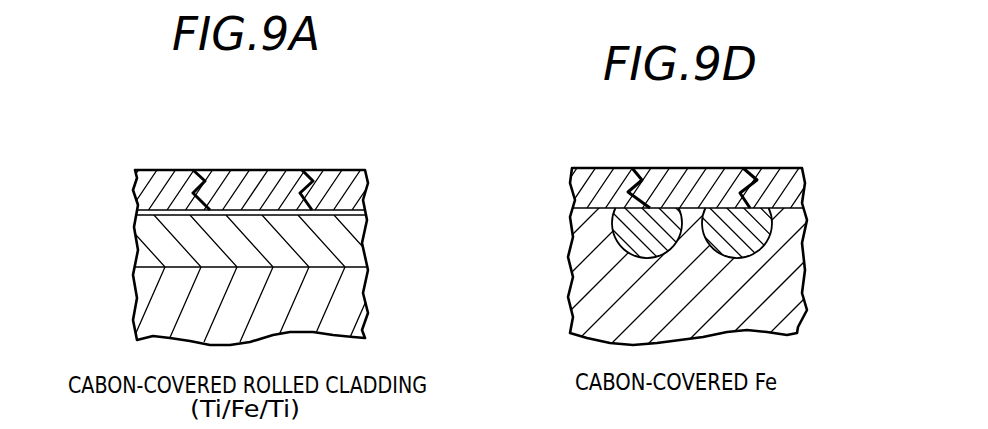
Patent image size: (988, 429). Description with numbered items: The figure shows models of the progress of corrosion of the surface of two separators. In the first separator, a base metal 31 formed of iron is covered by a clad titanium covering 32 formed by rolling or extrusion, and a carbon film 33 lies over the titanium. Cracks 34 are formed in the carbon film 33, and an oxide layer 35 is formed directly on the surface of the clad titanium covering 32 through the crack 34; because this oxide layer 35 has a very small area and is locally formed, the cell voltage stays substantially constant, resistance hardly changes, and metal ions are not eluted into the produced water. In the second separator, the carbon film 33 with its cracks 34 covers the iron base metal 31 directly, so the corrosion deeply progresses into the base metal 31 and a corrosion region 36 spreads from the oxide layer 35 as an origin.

In FIG. 9A, the base metal 31 is at (147, 310).
In FIG. 9D, the base metal 31 is at (800, 340).
In FIG. 9A, the clad titanium covering 32 is at (135, 228).
In FIG. 9A, the carbon film 33 is at (155, 173).
In FIG. 9D, the carbon film 33 is at (573, 178).
In FIG. 9A, the cracks 34 is at (318, 170).
In FIG. 9D, the cracks 34 is at (758, 168).
In FIG. 9A, the oxide layer 35 is at (350, 213).
In FIG. 9D, the corrosion region 36 is at (637, 250).